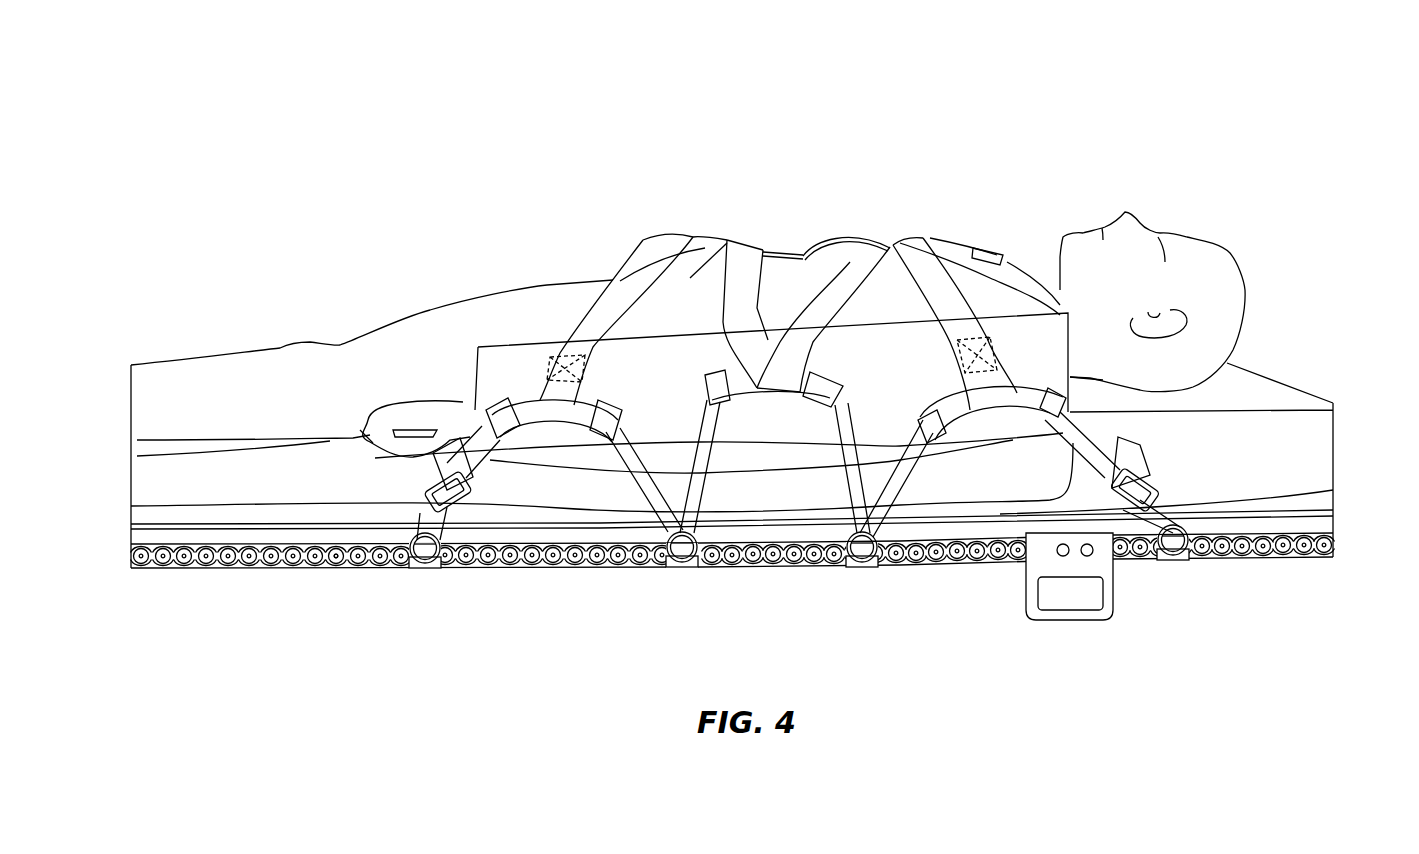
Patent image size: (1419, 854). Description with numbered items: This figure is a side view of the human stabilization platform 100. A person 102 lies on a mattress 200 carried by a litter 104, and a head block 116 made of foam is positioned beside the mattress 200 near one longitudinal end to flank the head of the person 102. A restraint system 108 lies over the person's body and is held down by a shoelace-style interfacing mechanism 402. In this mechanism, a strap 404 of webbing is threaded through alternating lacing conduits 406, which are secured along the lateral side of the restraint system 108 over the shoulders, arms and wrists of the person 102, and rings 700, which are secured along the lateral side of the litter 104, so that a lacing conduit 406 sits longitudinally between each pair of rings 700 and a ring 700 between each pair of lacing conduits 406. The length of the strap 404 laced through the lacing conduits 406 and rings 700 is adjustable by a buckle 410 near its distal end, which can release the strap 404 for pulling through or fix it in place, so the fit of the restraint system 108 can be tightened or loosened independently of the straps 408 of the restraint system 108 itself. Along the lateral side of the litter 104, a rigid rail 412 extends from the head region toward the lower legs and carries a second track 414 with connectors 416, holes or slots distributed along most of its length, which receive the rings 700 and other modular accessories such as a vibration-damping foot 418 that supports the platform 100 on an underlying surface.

The human stabilization platform 100 is at (1070, 155).
The person 102 is at (1212, 257).
The litter 104 is at (322, 569).
The restraint system 108 is at (702, 252).
The head block 116 is at (1305, 450).
The mattress 200 is at (155, 483).
The interfacing mechanism 402 is at (697, 485).
The strap 404 is at (893, 493).
The lacing conduit 406 is at (783, 253).
The strap of the restraint system 408 is at (908, 267).
The buckle 410 is at (425, 482).
The rail 412 is at (728, 588).
The second track 414 is at (240, 568).
The connector 416 is at (272, 569).
The vibration-damping foot 418 is at (1077, 600).
The ring 700 is at (425, 566).